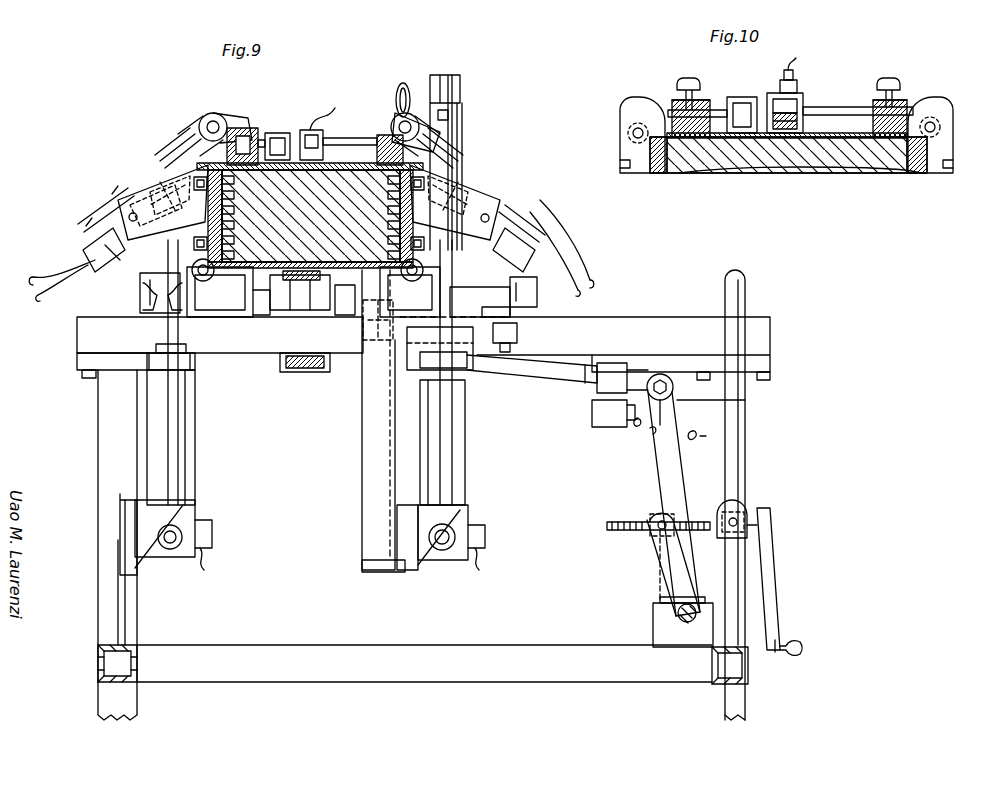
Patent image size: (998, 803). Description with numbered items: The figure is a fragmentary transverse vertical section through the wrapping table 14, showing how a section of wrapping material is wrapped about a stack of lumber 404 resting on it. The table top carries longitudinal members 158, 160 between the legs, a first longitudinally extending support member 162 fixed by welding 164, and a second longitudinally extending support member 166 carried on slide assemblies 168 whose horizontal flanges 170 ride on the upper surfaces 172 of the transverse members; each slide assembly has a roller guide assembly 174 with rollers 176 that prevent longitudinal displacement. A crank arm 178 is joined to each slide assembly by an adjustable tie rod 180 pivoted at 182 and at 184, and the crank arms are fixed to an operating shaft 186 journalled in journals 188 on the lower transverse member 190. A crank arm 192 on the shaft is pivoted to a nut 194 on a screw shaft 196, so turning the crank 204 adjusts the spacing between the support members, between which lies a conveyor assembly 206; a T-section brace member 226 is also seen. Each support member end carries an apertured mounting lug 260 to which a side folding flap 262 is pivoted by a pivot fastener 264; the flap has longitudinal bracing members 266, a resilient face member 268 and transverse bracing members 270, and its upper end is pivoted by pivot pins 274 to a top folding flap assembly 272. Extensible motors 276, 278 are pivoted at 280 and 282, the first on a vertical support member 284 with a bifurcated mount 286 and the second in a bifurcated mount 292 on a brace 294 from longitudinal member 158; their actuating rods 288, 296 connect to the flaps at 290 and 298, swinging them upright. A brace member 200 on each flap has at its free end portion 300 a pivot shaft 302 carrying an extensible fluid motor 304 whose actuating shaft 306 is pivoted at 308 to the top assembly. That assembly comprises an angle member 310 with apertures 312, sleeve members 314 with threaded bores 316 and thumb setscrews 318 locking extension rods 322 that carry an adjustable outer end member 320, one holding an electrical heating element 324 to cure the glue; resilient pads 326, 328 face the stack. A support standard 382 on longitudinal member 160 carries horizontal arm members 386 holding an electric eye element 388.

In FIG. 9, the wrapping table 14 is at (430, 68).
In FIG. 9, the longitudinal member 158 is at (138, 655).
In FIG. 9, the longitudinal member 160 is at (746, 672).
In FIG. 9, the first longitudinally extending support member 162 is at (248, 318).
In FIG. 9, the welding 164 is at (215, 312).
In FIG. 9, the second longitudinally extending support member 166 is at (358, 312).
In FIG. 9, the slide assembly 168 is at (520, 290).
In FIG. 9, the horizontal flange 170 is at (512, 310).
In FIG. 9, the upper surface 172 is at (633, 318).
In FIG. 9, the roller guide assembly 174 is at (530, 340).
In FIG. 9, the roller 176 is at (360, 352).
In FIG. 9, the crank arm 178 is at (660, 470).
In FIG. 9, the adjustable tie rod 180 is at (568, 378).
In FIG. 9, the pivot connection 182 is at (661, 424).
In FIG. 9, the pivot connection 184 is at (460, 370).
In FIG. 9, the operating shaft 186 is at (678, 613).
In FIG. 9, the journal 188 is at (665, 628).
In FIG. 9, the lower transverse member 190 is at (475, 660).
In FIG. 9, the crank arm 192 is at (655, 552).
In FIG. 9, the nut 194 is at (655, 512).
In FIG. 9, the screw shaft 196 is at (697, 512).
In FIG. 9, the brace member 200 is at (462, 240).
In FIG. 9, the crank 204 is at (770, 585).
In FIG. 9, the conveyor assembly 206 is at (300, 378).
In FIG. 9, the brace member 226 is at (312, 296).
In FIG. 9, the apertured mounting lug 260 is at (245, 290).
In FIG. 9, the side folding flap 262 is at (195, 168).
In FIG. 9, the pivot fastener 264 is at (195, 268).
In FIG. 9, the longitudinal bracing member 266 is at (200, 190).
In FIG. 9, the resilient face member 268 is at (232, 222).
In FIG. 9, the transverse bracing member 270 is at (196, 172).
In FIG. 10, the transverse bracing member 270 is at (625, 150).
In FIG. 9, the top folding flap assembly 272 is at (275, 128).
In FIG. 9, the pivot pin 274 is at (205, 138).
In FIG. 10, the pivot pin 274 is at (634, 126).
In FIG. 9, the extensible motor 276 is at (460, 470).
In FIG. 9, the extensible motor 278 is at (183, 452).
In FIG. 9, the pivot mount 280 is at (442, 545).
In FIG. 9, the pivot mount 282 is at (180, 532).
In FIG. 9, the vertical support member 284 is at (367, 455).
In FIG. 9, the bifurcated mount 286 is at (403, 570).
In FIG. 9, the actuating rod 288 is at (452, 305).
In FIG. 9, the pivot connection 290 is at (485, 192).
In FIG. 9, the bifurcated mount 292 is at (150, 562).
In FIG. 9, the brace 294 is at (108, 600).
In FIG. 9, the actuating rod 296 is at (165, 325).
In FIG. 9, the pivot connection 298 is at (108, 198).
In FIG. 9, the free end portion 300 is at (160, 182).
In FIG. 9, the pivot shaft 302 is at (129, 217).
In FIG. 9, the extensible fluid motor 304 is at (82, 272).
In FIG. 9, the actuating shaft 306 is at (187, 138).
In FIG. 9, the pivot connection 308 is at (213, 122).
In FIG. 9, the angle member 310 is at (248, 128).
In FIG. 10, the angle member 310 is at (730, 96).
In FIG. 10, the aperture 312 is at (740, 110).
In FIG. 10, the sleeve member 314 is at (677, 100).
In FIG. 10, the threaded bore 316 is at (700, 110).
In FIG. 10, the thumb setscrew 318 is at (688, 78).
In FIG. 10, the outer end member 320 is at (775, 88).
In FIG. 10, the extension rod 322 is at (820, 112).
In FIG. 9, the electrical heating element 324 is at (306, 130).
In FIG. 10, the electrical heating element 324 is at (788, 150).
In FIG. 10, the resilient pad 326 is at (690, 130).
In FIG. 10, the resilient pad 328 is at (770, 150).
In FIG. 9, the support standard 382 is at (745, 304).
In FIG. 9, the horizontal arm member 386 is at (622, 405).
In FIG. 9, the electric eye element 388 is at (625, 370).
In FIG. 9, the stack of lumber 404 is at (311, 216).